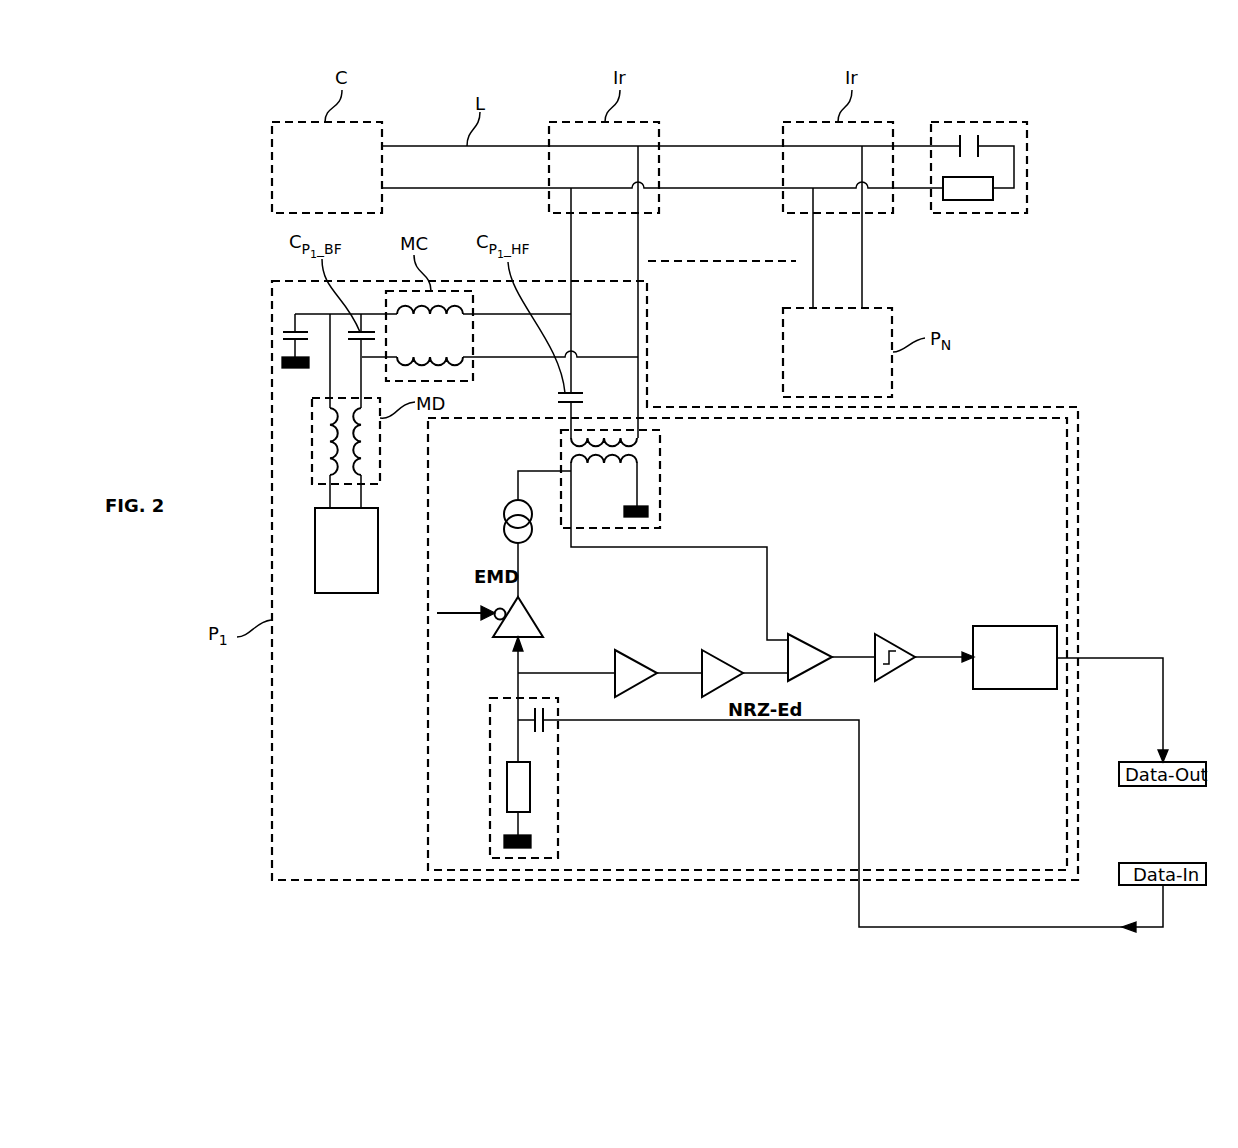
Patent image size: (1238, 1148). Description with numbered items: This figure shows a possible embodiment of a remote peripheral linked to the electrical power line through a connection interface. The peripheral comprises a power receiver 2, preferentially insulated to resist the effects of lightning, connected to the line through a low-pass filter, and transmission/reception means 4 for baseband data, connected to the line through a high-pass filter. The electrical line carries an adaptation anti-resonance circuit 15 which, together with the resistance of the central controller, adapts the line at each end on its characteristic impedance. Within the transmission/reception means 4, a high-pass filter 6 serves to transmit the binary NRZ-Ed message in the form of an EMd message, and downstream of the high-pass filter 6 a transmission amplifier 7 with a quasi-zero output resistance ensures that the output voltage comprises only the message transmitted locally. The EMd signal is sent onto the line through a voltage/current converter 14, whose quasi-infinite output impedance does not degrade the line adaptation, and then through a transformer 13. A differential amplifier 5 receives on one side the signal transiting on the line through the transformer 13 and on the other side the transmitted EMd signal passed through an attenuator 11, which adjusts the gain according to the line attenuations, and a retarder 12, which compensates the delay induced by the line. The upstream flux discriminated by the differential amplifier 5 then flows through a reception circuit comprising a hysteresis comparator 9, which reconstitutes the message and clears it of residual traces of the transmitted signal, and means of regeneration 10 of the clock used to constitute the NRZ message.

The power receiver 2 is at (345, 596).
The transmission/reception means 4 is at (427, 705).
The differential amplifier 5 is at (790, 634).
The high-pass filter 6 is at (558, 780).
The transmission amplifier 7 is at (543, 637).
The hysteresis comparator 9 is at (877, 634).
The means of regeneration of the clock 10 is at (1015, 626).
The attenuator 11 is at (616, 650).
The retarder 12 is at (703, 650).
The transformer 13 is at (661, 478).
The voltage/current converter 14 is at (531, 524).
The adaptation anti-resonance circuit 15 is at (980, 122).